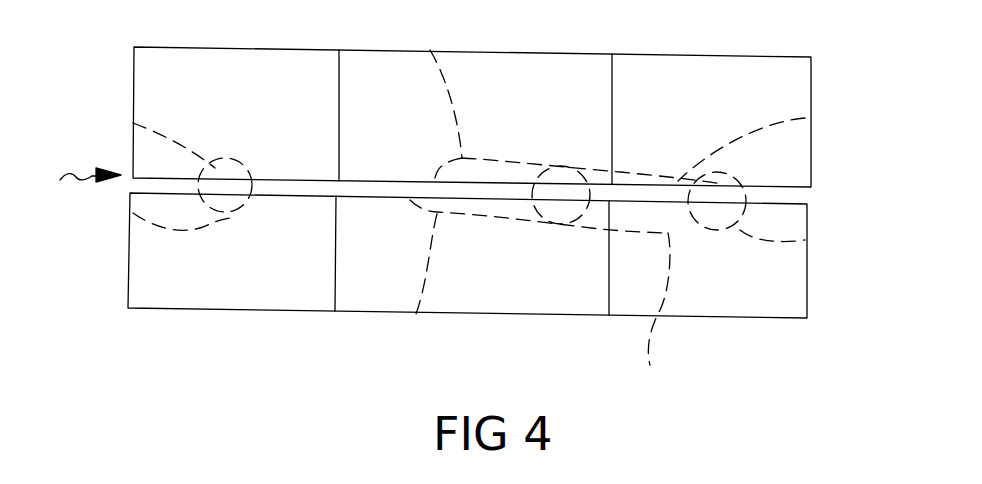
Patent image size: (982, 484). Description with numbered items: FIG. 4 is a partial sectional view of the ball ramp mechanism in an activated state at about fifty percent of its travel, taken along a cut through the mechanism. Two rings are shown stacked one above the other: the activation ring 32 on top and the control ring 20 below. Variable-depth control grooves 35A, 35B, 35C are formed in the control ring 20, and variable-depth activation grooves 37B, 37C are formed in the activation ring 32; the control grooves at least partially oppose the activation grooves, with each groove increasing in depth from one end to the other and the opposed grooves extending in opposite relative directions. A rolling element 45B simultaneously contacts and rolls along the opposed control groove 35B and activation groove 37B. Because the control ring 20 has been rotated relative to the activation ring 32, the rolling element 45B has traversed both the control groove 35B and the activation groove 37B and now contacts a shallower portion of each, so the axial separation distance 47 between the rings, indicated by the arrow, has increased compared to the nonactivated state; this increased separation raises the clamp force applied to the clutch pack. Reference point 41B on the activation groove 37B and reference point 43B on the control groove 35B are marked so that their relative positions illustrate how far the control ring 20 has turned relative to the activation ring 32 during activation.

The control ring 20 is at (145, 250).
The activation ring 32 is at (155, 82).
The separation distance 47 is at (70, 178).
The control groove 35A is at (805, 240).
The control groove 35B is at (416, 314).
The control groove 35C is at (133, 213).
The activation groove 37B is at (805, 118).
The activation groove 37C is at (133, 123).
The reference point 41B is at (430, 50).
The reference point 43B is at (650, 365).
The rolling element 45B is at (597, 186).